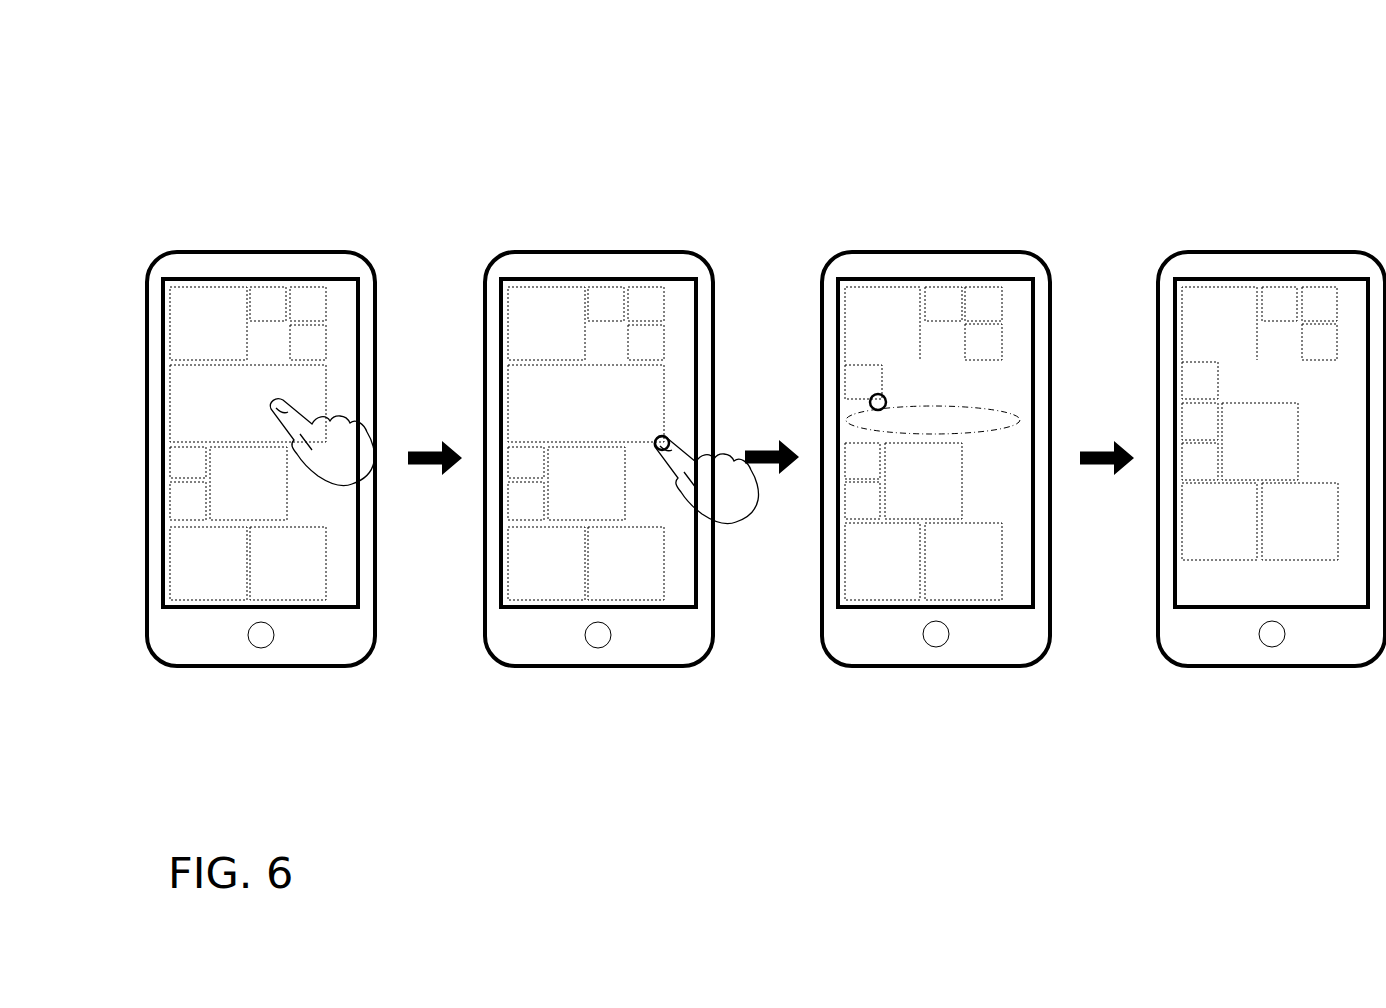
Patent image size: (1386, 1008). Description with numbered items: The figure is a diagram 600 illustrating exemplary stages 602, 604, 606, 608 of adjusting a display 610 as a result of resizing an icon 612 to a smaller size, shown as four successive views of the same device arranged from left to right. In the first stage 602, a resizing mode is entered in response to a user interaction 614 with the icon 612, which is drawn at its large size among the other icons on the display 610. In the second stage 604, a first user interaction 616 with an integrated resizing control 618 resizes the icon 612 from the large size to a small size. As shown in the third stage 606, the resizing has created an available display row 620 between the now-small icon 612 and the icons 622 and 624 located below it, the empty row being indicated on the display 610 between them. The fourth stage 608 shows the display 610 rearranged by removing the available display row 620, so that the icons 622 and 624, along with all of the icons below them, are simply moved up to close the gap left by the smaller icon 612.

The diagram 600 is at (368, 122).
The stage 602 is at (280, 699).
The stage 604 is at (616, 699).
The stage 606 is at (954, 699).
The stage 608 is at (1296, 699).
The display 610 is at (341, 356).
The icon 612 is at (1199, 378).
The user interaction 614 is at (322, 442).
The first user interaction 616 is at (706, 480).
The integrated resizing control 618 is at (887, 403).
The available display row 620 is at (933, 420).
The icon 622 is at (858, 461).
The icon 624 is at (754, 461).